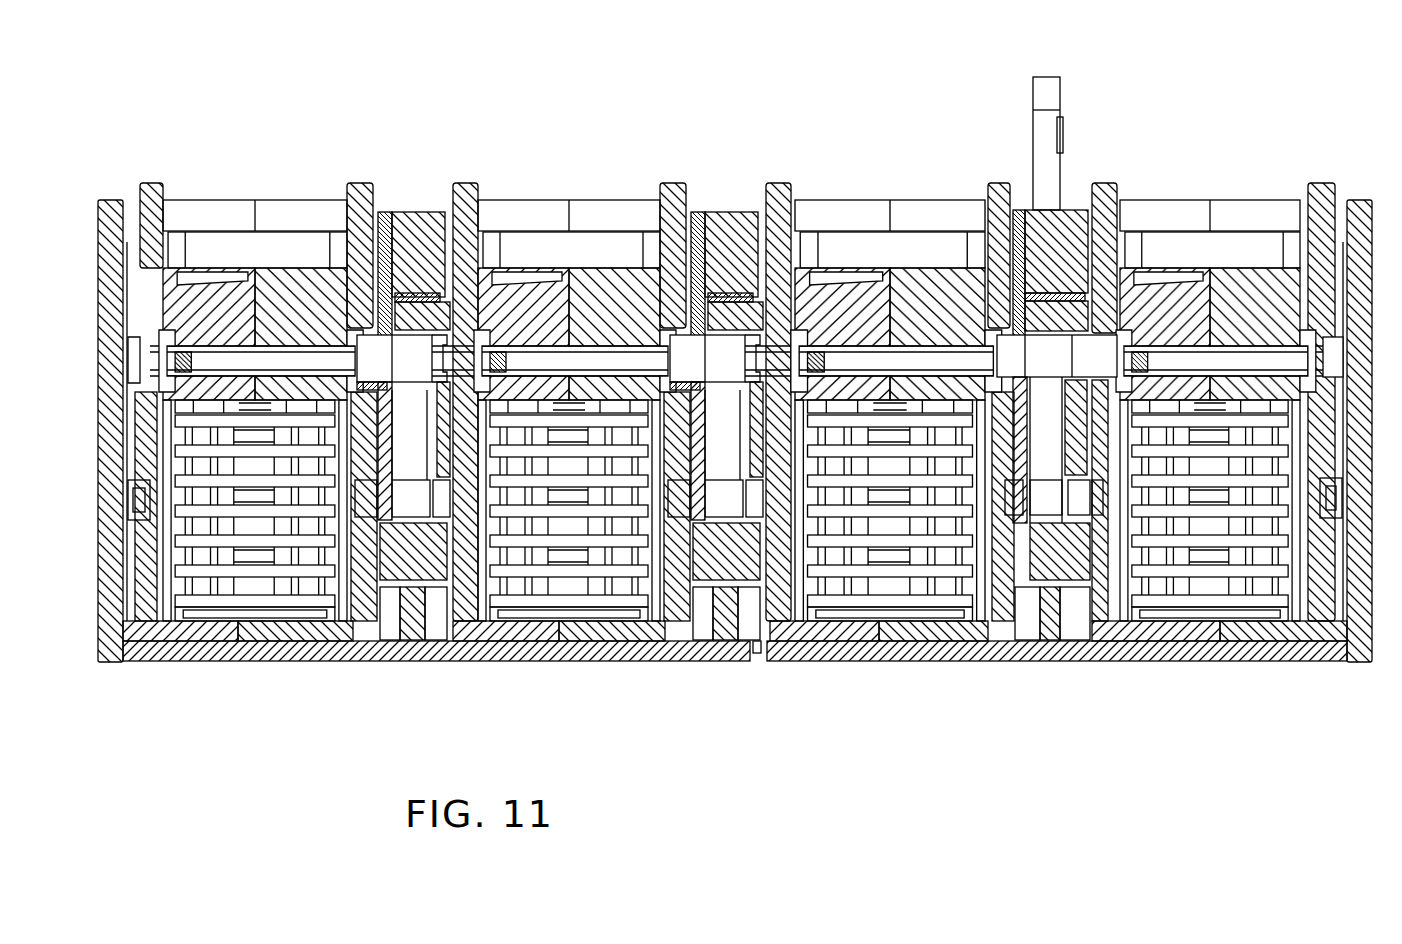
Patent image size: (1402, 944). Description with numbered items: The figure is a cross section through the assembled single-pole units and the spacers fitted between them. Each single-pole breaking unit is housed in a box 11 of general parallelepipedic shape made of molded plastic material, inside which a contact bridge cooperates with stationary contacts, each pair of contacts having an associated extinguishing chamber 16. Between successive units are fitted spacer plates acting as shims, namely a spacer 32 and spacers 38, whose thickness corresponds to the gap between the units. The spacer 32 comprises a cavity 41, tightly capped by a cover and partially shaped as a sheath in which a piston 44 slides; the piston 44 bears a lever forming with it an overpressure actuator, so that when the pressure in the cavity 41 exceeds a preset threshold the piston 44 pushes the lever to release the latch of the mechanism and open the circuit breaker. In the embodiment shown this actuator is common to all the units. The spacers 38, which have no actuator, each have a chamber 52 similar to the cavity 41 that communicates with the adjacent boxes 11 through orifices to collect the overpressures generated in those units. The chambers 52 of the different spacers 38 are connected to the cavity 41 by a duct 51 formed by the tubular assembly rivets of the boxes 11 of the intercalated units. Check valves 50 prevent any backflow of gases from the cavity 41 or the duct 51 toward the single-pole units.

The box 11 is at (878, 628).
The extinguishing chamber 16 is at (890, 540).
The spacer 32 is at (1052, 252).
The spacer 38 is at (416, 250).
The cavity 41 is at (1042, 460).
The piston 44 is at (1048, 353).
The check valve 50 is at (1038, 577).
The duct 51 is at (577, 360).
The chamber 52 is at (410, 505).